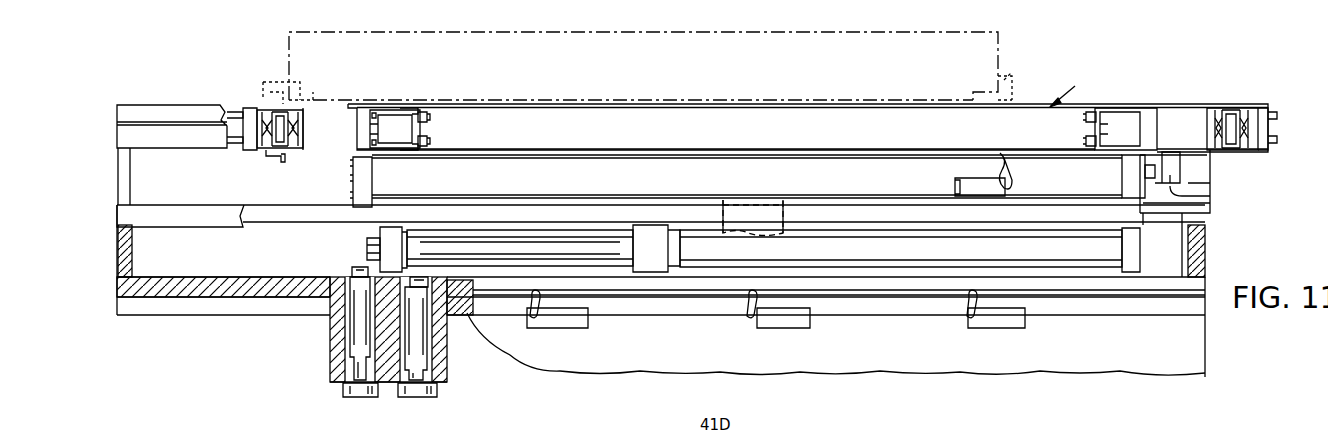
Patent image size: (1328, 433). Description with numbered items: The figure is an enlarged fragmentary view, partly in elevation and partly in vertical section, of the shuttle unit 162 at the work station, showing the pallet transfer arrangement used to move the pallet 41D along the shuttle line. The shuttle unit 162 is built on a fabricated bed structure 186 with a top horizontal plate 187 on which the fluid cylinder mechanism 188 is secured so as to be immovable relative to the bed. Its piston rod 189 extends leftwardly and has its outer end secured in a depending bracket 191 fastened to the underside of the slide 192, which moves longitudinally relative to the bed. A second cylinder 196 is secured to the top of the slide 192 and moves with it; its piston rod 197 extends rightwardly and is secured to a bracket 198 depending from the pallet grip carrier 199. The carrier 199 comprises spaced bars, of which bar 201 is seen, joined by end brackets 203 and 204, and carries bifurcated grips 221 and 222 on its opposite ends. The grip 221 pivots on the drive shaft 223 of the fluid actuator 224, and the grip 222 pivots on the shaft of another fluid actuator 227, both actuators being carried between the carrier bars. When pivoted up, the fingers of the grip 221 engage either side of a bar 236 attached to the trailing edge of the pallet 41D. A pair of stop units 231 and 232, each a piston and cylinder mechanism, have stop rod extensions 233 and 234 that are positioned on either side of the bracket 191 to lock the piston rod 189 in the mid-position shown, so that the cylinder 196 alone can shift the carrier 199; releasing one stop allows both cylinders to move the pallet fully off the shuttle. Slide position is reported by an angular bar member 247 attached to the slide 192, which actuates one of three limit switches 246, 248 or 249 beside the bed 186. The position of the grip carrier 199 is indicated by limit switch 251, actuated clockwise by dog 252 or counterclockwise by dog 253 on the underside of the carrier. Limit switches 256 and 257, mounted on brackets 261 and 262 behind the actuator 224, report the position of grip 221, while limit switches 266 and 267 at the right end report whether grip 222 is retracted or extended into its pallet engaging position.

The pallet 41D is at (683, 40).
The shuttle unit 162 is at (300, 330).
The bed structure 186 is at (1190, 354).
The top horizontal plate 187 is at (180, 288).
The fluid cylinder mechanism 188 is at (975, 236).
The piston rod 189 is at (575, 252).
The depending bracket 191 is at (383, 251).
The slide 192 is at (383, 213).
The cylinder 196 is at (378, 186).
The piston rod 197 is at (1190, 199).
The bracket 198 is at (1185, 170).
The pallet grip carrier 199 is at (1080, 83).
The bar 201 is at (1018, 113).
The end bracket 203 is at (253, 142).
The end bracket 204 is at (1262, 110).
The bifurcated grip 221 is at (268, 118).
The bifurcated grip 222 is at (1228, 115).
The drive shaft 223 is at (303, 135).
The fluid actuator 224 is at (390, 125).
The fluid actuator 227 is at (1108, 128).
The stop unit 231 is at (344, 393).
The stop unit 232 is at (438, 392).
The stop rod extension 233 is at (352, 270).
The stop rod extension 234 is at (418, 280).
The bar 236 is at (1008, 78).
The limit switch 246 is at (747, 320).
The angular bar member 247 is at (783, 216).
The limit switch 248 is at (530, 320).
The limit switch 249 is at (968, 320).
The limit switch 251 is at (1012, 190).
The dog 252 is at (281, 160).
The dog 253 is at (1008, 156).
The limit switch 256 is at (428, 115).
The limit switch 257 is at (428, 143).
The bracket 261 is at (416, 150).
The bracket 262 is at (414, 108).
The limit switch 266 is at (1092, 117).
The limit switch 267 is at (1092, 143).